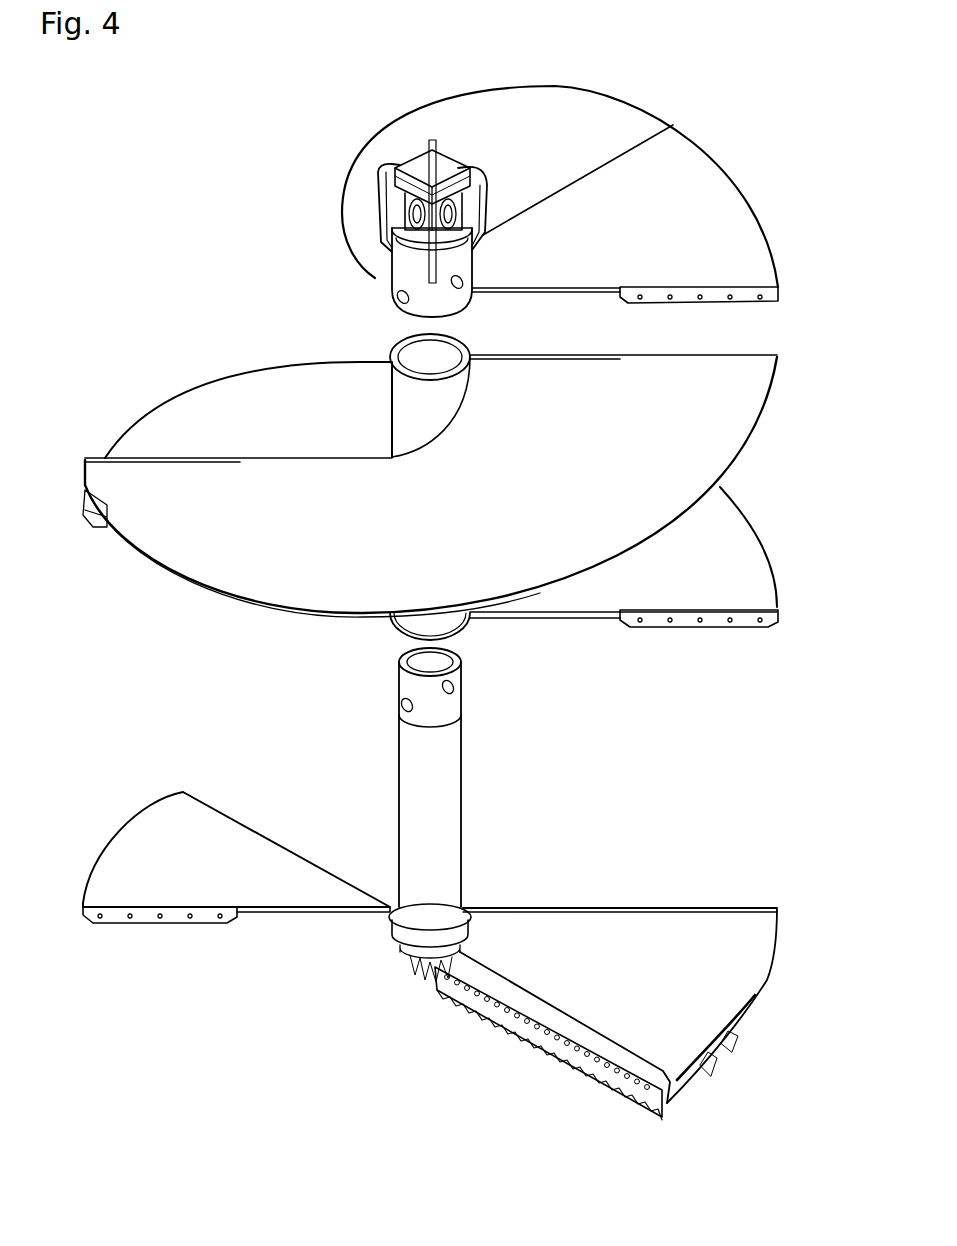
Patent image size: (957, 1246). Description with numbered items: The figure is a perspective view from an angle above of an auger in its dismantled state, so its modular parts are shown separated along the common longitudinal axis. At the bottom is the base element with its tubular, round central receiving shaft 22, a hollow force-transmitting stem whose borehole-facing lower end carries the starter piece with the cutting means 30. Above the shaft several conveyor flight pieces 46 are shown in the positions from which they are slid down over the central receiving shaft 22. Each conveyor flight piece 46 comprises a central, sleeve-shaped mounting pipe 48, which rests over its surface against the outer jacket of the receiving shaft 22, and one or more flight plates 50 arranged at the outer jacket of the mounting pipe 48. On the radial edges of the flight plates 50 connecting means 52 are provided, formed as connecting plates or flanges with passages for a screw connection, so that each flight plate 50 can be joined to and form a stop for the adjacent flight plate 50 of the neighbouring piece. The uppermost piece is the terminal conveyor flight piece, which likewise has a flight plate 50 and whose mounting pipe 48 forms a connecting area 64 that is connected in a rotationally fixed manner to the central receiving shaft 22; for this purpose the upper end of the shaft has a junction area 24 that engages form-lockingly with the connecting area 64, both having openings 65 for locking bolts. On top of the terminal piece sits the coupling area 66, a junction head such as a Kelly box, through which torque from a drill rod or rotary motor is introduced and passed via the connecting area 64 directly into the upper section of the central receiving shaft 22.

The central receiving shaft 22 is at (442, 800).
The junction area 24 is at (453, 705).
The cutting means 30 is at (557, 1023).
The conveyor flight piece 46 is at (792, 383).
The mounting pipe 48 is at (398, 352).
The flight plate 50 is at (627, 233).
The connecting means 52 is at (651, 302).
The connecting area 64 is at (412, 259).
The openings 65 is at (473, 292).
The coupling area 66 is at (416, 156).